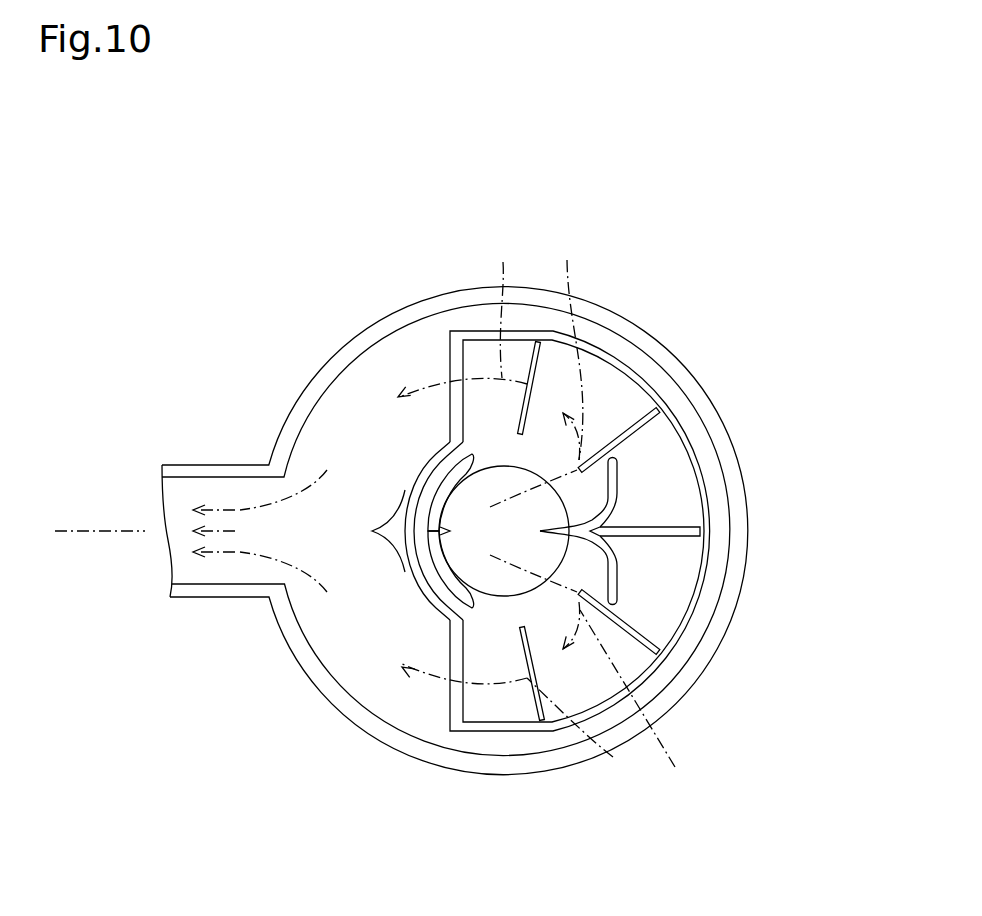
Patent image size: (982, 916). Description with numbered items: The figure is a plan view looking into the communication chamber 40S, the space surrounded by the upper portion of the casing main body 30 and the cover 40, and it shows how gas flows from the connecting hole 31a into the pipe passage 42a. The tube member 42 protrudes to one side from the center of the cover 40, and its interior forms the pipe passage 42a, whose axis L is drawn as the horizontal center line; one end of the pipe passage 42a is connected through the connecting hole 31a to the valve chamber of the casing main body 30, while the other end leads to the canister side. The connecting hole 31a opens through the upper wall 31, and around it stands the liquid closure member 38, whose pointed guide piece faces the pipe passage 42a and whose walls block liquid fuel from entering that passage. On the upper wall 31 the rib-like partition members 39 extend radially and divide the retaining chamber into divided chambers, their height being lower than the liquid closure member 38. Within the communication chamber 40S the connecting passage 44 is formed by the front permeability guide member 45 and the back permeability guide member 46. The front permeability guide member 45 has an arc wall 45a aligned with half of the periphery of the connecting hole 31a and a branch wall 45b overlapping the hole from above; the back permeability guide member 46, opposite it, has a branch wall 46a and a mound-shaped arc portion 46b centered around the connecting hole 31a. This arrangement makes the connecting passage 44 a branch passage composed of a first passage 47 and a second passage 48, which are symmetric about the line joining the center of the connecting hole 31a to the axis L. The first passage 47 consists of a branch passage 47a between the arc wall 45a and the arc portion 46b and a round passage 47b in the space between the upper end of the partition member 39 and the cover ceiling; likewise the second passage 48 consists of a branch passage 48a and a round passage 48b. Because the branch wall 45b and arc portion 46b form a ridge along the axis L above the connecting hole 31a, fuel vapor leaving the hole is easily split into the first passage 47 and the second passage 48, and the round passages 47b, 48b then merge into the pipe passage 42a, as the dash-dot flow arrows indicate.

The casing main body 30 is at (334, 765).
The upper wall 31 is at (382, 688).
The connecting hole 31a is at (478, 545).
The liquid closure member 38 is at (413, 477).
The partition member 39 is at (627, 422).
The cover 40 is at (736, 453).
The communication chamber 40S is at (620, 673).
The tube member 42 is at (180, 465).
The pipe passage 42a is at (252, 545).
The connecting passage 44 is at (555, 513).
The front permeability guide member 45 is at (501, 660).
The arc wall 45a is at (441, 512).
The branch wall 45b is at (457, 598).
The back permeability guide member 46 is at (702, 555).
The branch wall 46a is at (617, 563).
The arc portion 46b is at (617, 493).
The first passage 47 is at (529, 323).
The branch passage 47a is at (600, 353).
The round passage 47b is at (469, 334).
The second passage 48 is at (556, 720).
The branch passage 48a is at (588, 797).
The round passage 48b is at (521, 715).
The axis L is at (97, 531).